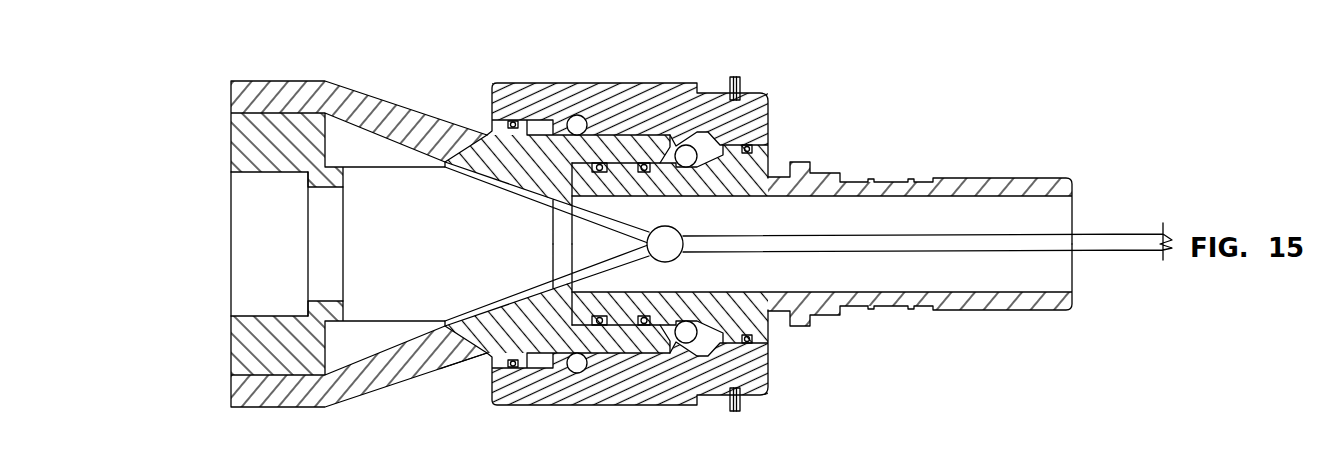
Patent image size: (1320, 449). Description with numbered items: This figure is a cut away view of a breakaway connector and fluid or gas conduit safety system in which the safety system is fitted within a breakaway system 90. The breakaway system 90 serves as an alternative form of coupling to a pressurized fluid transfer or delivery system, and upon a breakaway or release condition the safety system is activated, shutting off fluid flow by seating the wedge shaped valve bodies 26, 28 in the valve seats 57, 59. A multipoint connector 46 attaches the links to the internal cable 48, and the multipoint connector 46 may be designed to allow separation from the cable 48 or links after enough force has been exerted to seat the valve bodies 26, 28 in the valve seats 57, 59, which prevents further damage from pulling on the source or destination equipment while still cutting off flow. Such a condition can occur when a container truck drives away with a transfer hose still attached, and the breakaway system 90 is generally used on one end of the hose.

The breakaway system 90 is at (179, 126).
The valve body 26 is at (357, 140).
The valve body 28 is at (363, 350).
The valve seat 57 is at (546, 190).
The multipoint connector 46 is at (665, 226).
The cable 48 is at (943, 236).
The valve seat 59 is at (470, 350).